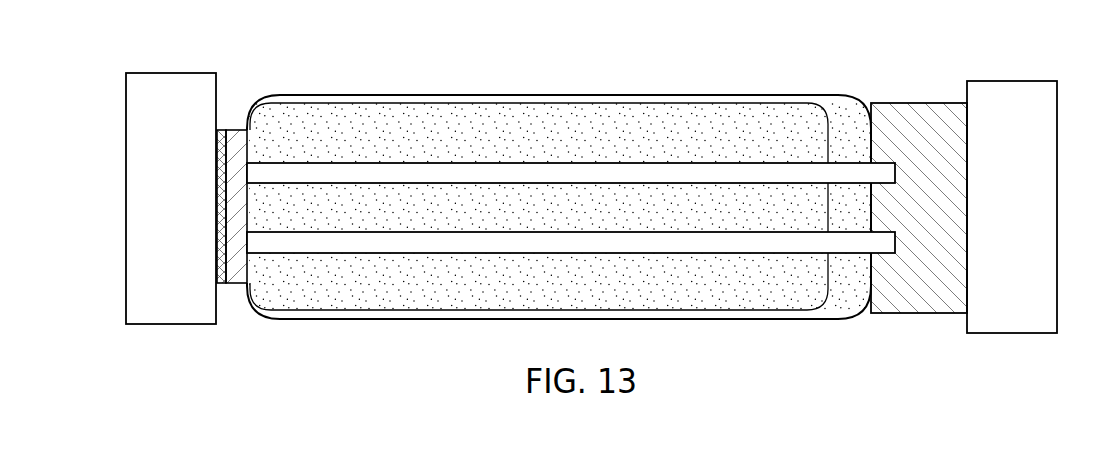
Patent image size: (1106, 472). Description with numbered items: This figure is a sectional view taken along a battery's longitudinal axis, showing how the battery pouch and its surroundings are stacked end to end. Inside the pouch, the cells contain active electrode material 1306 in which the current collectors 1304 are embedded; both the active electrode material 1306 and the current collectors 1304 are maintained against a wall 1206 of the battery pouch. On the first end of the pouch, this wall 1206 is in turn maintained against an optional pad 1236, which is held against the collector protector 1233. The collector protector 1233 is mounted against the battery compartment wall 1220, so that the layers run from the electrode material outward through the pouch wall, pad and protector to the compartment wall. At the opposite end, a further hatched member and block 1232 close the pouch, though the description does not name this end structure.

The battery compartment wall 1220 is at (167, 73).
The collector protector 1233 is at (222, 130).
The optional pad 1236 is at (241, 283).
The wall of the battery pouch 1206 is at (248, 126).
The current collectors 1304 is at (779, 163).
The active electrode material 1306 is at (695, 296).
The end assembly 1232 is at (888, 210).